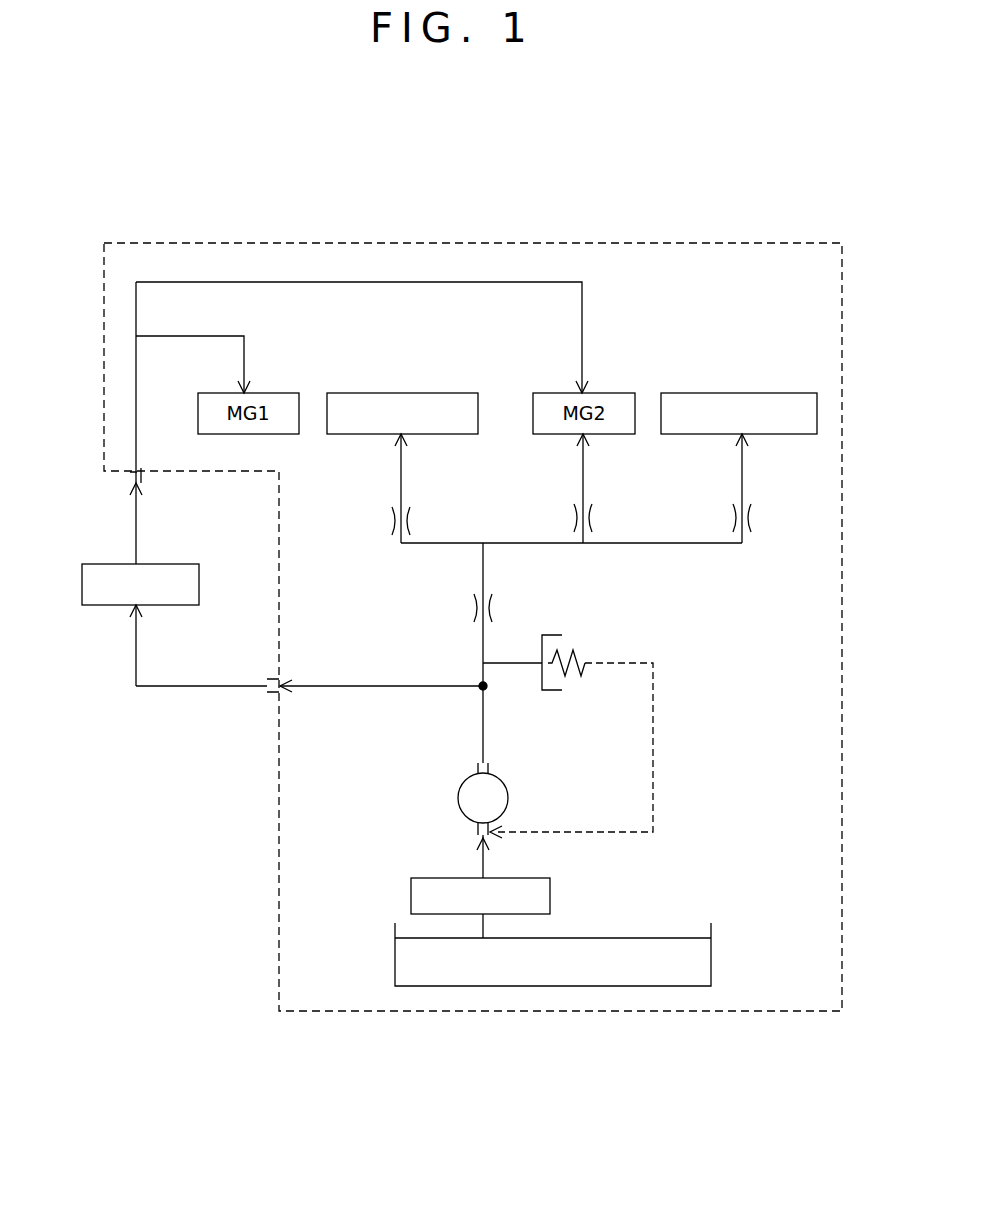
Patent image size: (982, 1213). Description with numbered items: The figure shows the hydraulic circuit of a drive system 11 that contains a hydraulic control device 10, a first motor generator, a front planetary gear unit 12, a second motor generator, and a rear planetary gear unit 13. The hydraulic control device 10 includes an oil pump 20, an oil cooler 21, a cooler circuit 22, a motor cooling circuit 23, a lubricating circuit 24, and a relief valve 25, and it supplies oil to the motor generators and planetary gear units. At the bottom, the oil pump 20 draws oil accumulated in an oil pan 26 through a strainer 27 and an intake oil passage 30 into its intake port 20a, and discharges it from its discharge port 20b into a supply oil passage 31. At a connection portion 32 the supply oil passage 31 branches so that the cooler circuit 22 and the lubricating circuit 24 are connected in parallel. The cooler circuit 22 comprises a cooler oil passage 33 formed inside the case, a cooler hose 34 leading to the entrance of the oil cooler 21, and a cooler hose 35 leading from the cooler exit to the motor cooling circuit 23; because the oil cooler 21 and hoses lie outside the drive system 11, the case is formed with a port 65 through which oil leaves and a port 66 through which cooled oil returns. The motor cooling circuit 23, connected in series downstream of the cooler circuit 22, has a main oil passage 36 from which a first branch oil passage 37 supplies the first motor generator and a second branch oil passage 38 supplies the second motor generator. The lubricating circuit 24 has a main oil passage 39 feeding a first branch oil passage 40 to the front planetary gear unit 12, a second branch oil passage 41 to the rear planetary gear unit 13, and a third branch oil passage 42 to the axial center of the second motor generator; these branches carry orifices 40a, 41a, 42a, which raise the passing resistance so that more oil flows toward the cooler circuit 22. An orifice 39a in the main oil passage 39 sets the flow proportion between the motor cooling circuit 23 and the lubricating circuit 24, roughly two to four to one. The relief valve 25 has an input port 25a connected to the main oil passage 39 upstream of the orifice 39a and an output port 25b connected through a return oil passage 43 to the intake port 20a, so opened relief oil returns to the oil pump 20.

The hydraulic control device 10 is at (665, 159).
The drive system 11 is at (745, 243).
The front planetary gear unit 12 is at (453, 393).
The rear planetary gear unit 13 is at (790, 393).
The oil pump 20 is at (445, 804).
The intake port 20a is at (478, 826).
The discharge port 20b is at (480, 768).
The oil cooler 21 is at (170, 564).
The cooler circuit 22 is at (131, 666).
The motor cooling circuit 23 is at (316, 334).
The lubricating circuit 24 is at (575, 541).
The relief valve 25 is at (577, 717).
The input port 25a is at (512, 663).
The output port 25b is at (585, 663).
The oil pan 26 is at (712, 963).
The strainer 27 is at (551, 897).
The intake oil passage 30 is at (485, 860).
The supply oil passage 31 is at (483, 722).
The connection portion 32 is at (487, 688).
The cooler oil passage 33 is at (330, 688).
The cooler hose 34 is at (200, 688).
The cooler hose 35 is at (136, 530).
The main oil passage 36 is at (136, 373).
The first branch oil passage 37 is at (196, 336).
The second branch oil passage 38 is at (441, 283).
The main oil passage 39 is at (485, 614).
The orifice 39a is at (470, 612).
The first branch oil passage 40 is at (407, 488).
The orifice 40a is at (390, 521).
The second branch oil passage 41 is at (782, 492).
The orifice 41a is at (750, 520).
The third branch oil passage 42 is at (637, 488).
The orifice 42a is at (592, 518).
The return oil passage 43 is at (655, 748).
The port 65 is at (270, 696).
The port 66 is at (125, 480).